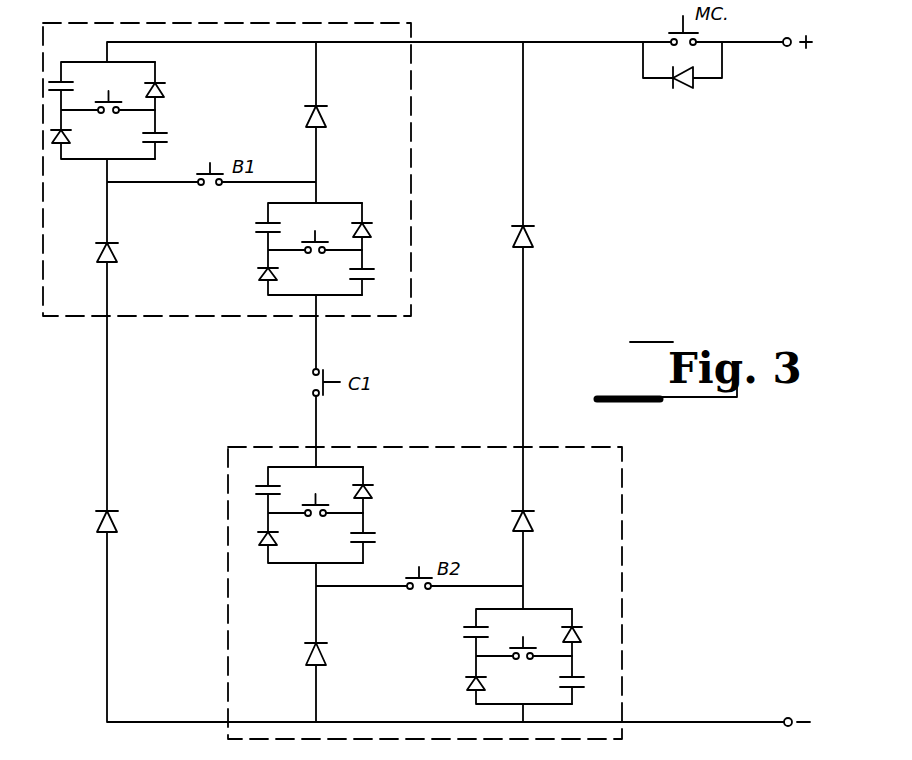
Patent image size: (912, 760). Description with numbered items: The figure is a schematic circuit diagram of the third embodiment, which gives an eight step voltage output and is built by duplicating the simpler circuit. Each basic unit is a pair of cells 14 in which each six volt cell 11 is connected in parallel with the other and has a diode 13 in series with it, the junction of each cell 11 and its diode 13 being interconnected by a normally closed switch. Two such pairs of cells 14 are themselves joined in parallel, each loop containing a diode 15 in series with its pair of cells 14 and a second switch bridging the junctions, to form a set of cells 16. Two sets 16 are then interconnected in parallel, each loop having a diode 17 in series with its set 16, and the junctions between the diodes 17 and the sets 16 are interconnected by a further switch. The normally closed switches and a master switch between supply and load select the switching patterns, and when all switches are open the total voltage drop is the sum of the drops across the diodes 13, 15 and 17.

The cell 11 is at (373, 276).
The diode 13 is at (373, 231).
The pair of cells 14 is at (168, 111).
The diode 15 is at (328, 117).
The set of cells 16 is at (420, 29).
The diode 17 is at (535, 237).